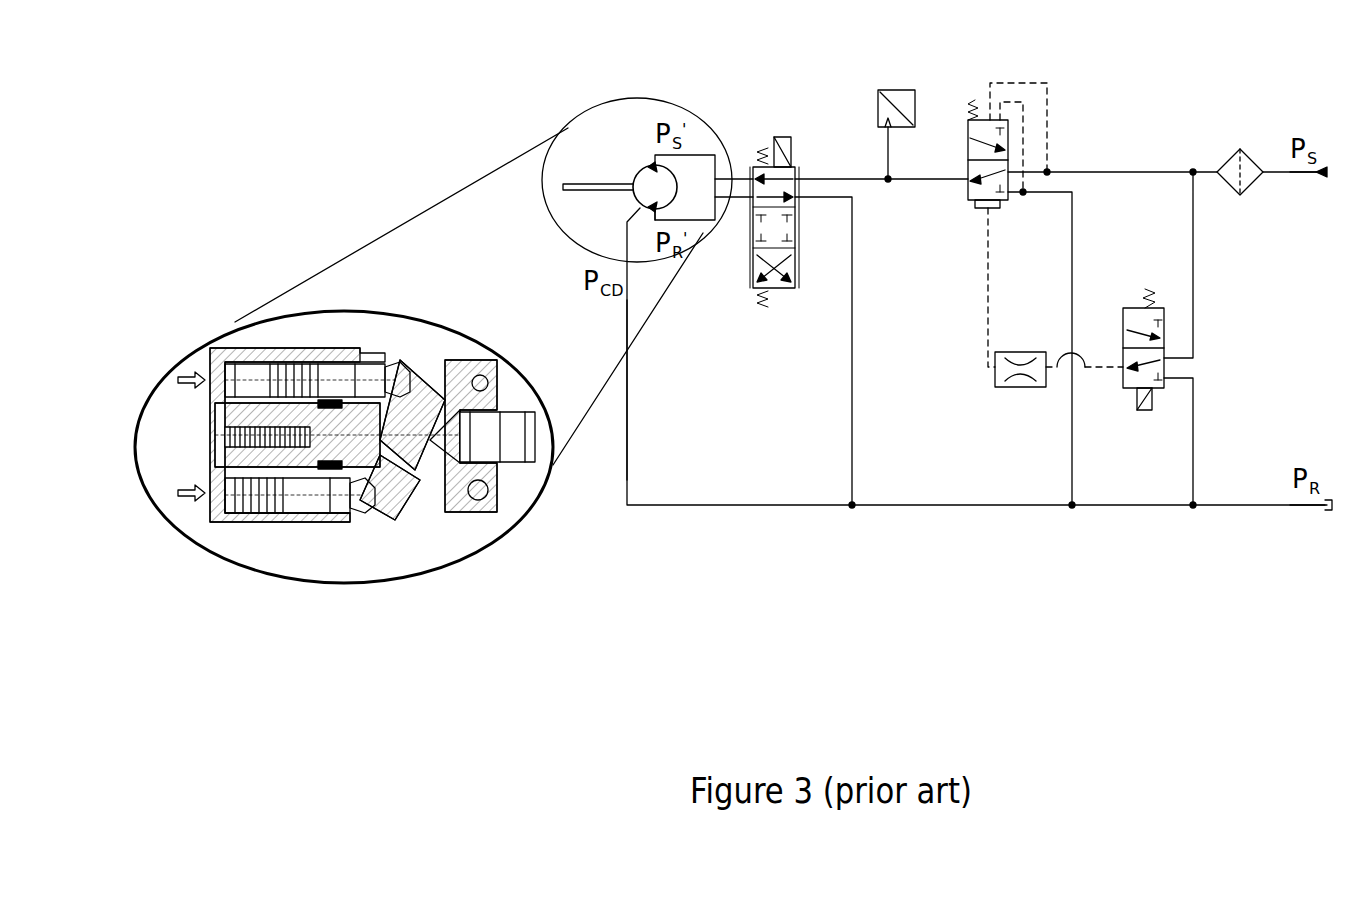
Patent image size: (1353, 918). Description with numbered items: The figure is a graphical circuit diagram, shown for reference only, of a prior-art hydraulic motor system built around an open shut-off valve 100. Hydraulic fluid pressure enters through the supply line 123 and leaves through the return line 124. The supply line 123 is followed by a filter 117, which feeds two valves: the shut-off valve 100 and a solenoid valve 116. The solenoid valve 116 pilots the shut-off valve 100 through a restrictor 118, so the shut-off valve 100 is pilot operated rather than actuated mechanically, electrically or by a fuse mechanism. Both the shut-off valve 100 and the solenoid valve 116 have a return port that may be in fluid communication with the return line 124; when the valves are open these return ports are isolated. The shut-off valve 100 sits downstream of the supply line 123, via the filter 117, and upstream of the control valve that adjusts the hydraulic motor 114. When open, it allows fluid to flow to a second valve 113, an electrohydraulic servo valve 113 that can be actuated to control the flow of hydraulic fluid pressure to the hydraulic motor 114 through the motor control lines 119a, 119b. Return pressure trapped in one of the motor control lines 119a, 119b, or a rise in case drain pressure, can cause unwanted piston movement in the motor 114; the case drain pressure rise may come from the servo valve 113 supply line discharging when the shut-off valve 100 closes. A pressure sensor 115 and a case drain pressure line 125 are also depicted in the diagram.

The shut-off valve 100 is at (977, 195).
The electrohydraulic servo valve 113 is at (773, 283).
The hydraulic motor 114 is at (648, 187).
The pressure sensor 115 is at (882, 89).
The solenoid valve 116 is at (1142, 318).
The filter 117 is at (1245, 165).
The restrictor 118 is at (1020, 380).
The motor control line 119a is at (713, 153).
The motor control line 119b is at (707, 223).
The supply line 123 is at (1266, 173).
The return line 124 is at (1256, 505).
The control pressure line 125 is at (628, 398).